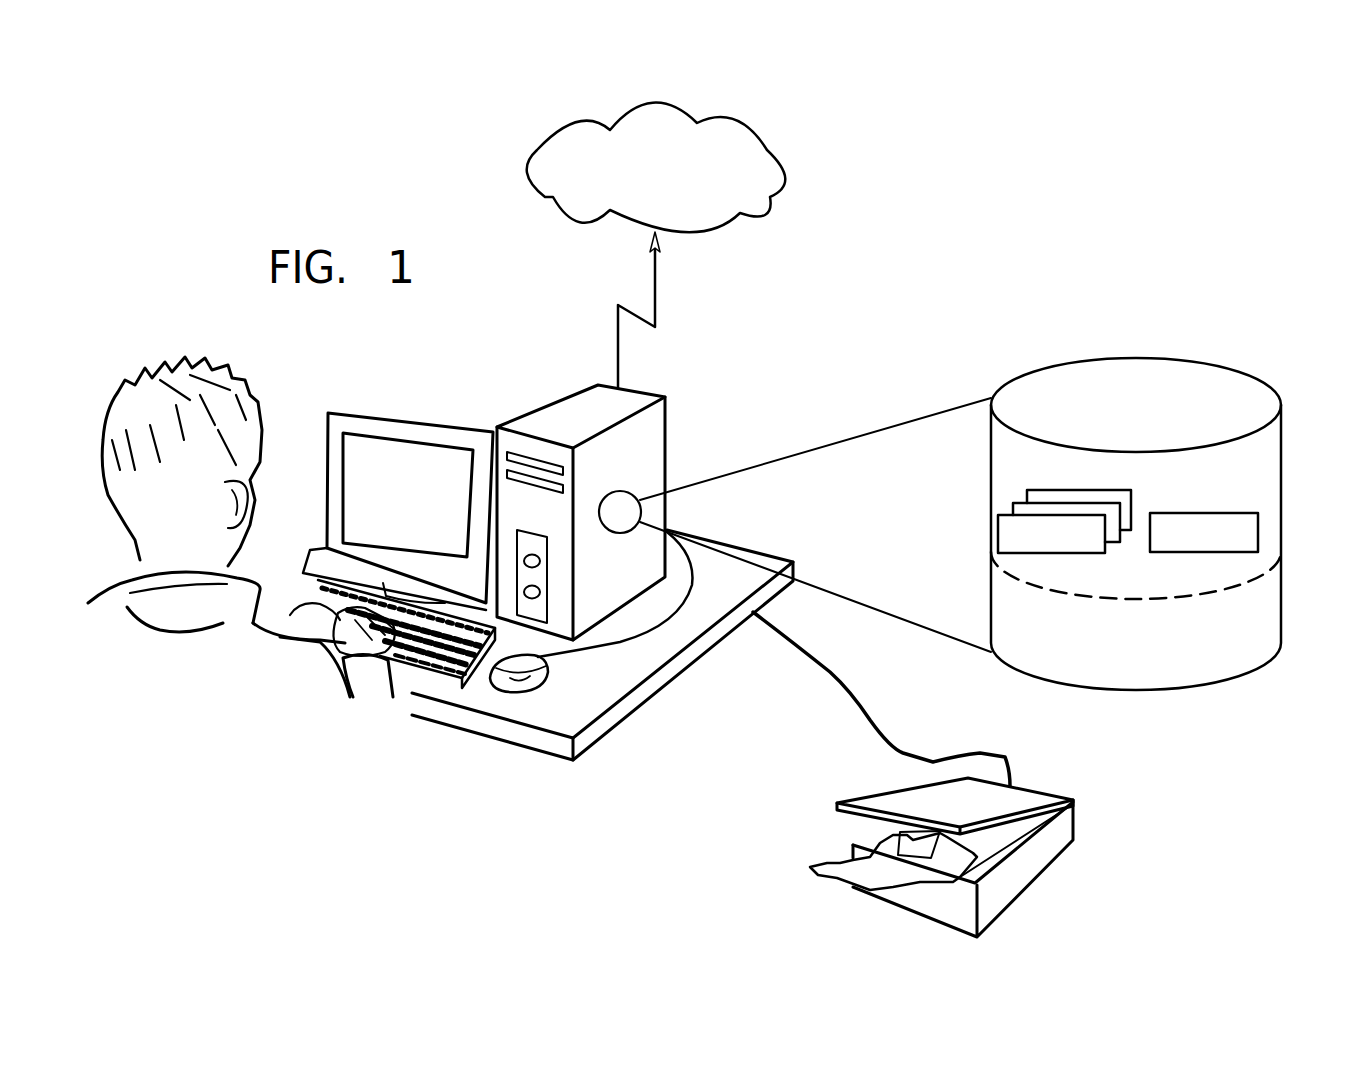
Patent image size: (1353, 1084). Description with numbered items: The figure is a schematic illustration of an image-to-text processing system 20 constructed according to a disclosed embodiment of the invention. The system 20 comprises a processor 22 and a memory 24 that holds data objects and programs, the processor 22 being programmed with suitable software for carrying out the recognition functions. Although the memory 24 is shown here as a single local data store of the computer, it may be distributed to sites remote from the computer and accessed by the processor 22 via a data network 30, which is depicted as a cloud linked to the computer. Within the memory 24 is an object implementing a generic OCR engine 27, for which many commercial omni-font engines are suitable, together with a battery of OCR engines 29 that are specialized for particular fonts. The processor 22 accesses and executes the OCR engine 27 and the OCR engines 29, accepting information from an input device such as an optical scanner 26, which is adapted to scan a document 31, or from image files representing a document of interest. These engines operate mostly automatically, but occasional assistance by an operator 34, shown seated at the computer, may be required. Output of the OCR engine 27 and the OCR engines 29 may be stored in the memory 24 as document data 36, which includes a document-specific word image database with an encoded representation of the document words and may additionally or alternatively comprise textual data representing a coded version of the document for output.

The image-to-text processing system 20 is at (1202, 220).
The processor 22 is at (570, 402).
The memory 24 is at (1148, 524).
The optical scanner 26 is at (921, 774).
The OCR engine 27 is at (1182, 513).
The OCR engines 29 is at (999, 518).
The data network 30 is at (681, 102).
The document 31 is at (830, 877).
The operator 34 is at (150, 533).
The document data 36 is at (1283, 602).